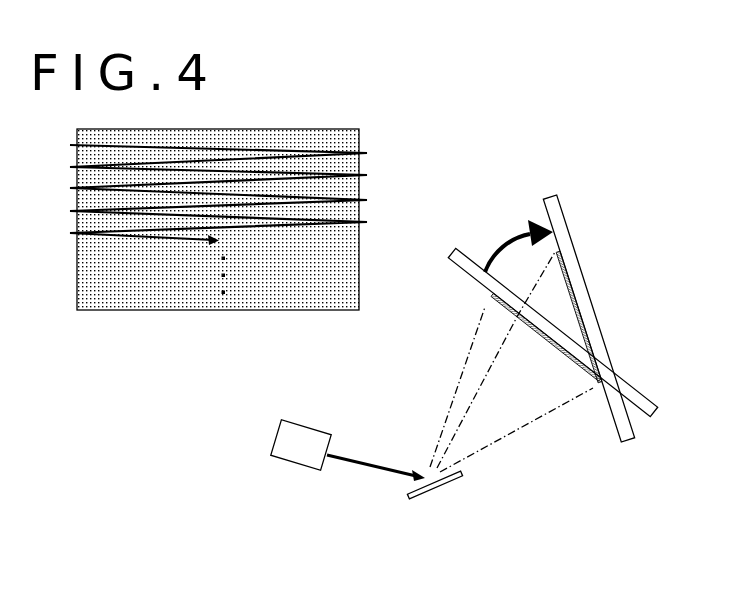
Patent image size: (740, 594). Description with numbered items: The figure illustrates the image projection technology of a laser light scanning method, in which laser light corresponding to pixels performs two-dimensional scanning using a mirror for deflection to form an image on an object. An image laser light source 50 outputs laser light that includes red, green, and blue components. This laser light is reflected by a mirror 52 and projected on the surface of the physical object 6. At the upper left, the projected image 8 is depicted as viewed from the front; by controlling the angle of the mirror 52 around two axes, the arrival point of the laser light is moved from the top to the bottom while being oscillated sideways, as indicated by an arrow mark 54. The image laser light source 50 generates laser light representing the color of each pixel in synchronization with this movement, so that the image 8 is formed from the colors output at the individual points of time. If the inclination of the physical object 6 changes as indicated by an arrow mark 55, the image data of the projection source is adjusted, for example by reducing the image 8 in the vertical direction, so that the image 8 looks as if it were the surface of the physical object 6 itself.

The projected image 8 is at (362, 288).
The arrow mark 54 is at (293, 152).
The physical object 6 is at (450, 250).
The arrow mark 55 is at (500, 233).
The image laser light source 50 is at (297, 465).
The mirror 52 is at (447, 480).